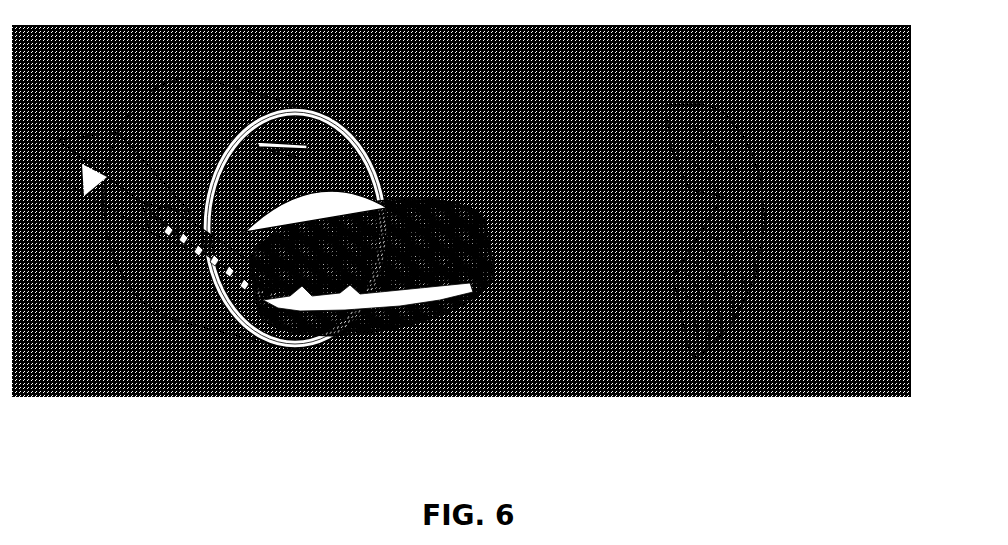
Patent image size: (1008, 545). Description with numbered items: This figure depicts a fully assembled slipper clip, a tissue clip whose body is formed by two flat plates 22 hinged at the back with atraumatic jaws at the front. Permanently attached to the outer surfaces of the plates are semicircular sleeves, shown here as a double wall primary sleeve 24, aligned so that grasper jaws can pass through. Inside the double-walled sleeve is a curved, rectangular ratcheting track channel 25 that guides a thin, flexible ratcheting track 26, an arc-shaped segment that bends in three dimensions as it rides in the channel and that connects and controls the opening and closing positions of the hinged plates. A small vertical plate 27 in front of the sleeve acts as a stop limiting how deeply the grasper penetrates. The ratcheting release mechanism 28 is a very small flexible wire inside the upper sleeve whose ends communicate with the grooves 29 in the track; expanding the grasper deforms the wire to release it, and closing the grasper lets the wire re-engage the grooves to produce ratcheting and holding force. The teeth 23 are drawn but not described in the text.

The flat plates 22 is at (448, 222).
The teeth 23 is at (201, 275).
The double wall primary sleeve 24 is at (396, 133).
The ratcheting track channel 25 is at (162, 109).
The ratcheting track 26 is at (141, 234).
The small vertical plate 27 is at (337, 218).
The ratcheting release mechanism 28 is at (308, 152).
The grooves 29 is at (688, 295).